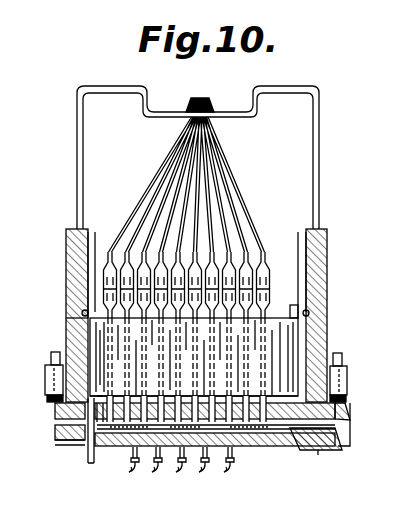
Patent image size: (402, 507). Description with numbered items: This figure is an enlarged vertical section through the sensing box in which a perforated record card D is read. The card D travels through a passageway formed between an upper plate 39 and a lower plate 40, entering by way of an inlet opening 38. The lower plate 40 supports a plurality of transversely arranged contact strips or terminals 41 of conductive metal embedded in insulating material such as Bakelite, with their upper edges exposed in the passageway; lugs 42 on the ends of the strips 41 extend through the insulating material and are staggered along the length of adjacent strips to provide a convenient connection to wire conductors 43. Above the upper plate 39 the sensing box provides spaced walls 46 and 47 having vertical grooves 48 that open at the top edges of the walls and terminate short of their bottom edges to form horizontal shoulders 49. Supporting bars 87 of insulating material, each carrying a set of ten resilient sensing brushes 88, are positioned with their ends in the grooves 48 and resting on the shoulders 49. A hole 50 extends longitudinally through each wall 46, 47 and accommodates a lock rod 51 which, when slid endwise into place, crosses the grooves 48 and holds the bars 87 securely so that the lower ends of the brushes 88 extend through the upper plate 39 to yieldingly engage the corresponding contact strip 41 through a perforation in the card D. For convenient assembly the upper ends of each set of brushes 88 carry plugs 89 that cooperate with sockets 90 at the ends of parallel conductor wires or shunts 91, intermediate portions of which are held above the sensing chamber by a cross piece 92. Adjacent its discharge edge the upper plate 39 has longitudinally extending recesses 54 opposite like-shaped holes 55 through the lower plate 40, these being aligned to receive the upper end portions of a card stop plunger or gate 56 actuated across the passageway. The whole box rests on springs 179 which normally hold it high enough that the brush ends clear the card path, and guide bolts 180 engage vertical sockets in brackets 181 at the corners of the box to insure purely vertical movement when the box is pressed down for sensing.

The cross piece 92 is at (77, 120).
The conductor wires or shunts 91 is at (215, 178).
The vertical grooves 48 is at (92, 232).
The wall 46 is at (72, 262).
The wall 47 is at (328, 262).
The sockets 90 is at (262, 275).
The lock rod 51 is at (82, 312).
The hole 50 is at (66, 320).
The plugs 89 is at (268, 298).
The supporting bars 87 is at (300, 335).
The guide bolts 180 is at (52, 358).
The brackets 181 is at (45, 378).
The springs 179 is at (48, 399).
The horizontal shoulders 49 is at (55, 412).
The lower plate 40 is at (55, 435).
The holes 55 is at (70, 445).
The card stop plunger or gate 56 is at (88, 462).
The upper plate 39 is at (346, 412).
The recesses 54 is at (100, 402).
The sensing brushes 88 is at (240, 400).
The contact strips or terminals 41 is at (258, 447).
The inlet opening 38 is at (340, 440).
The card D is at (317, 450).
The lugs 42 is at (134, 455).
The wire conductors 43 is at (128, 471).